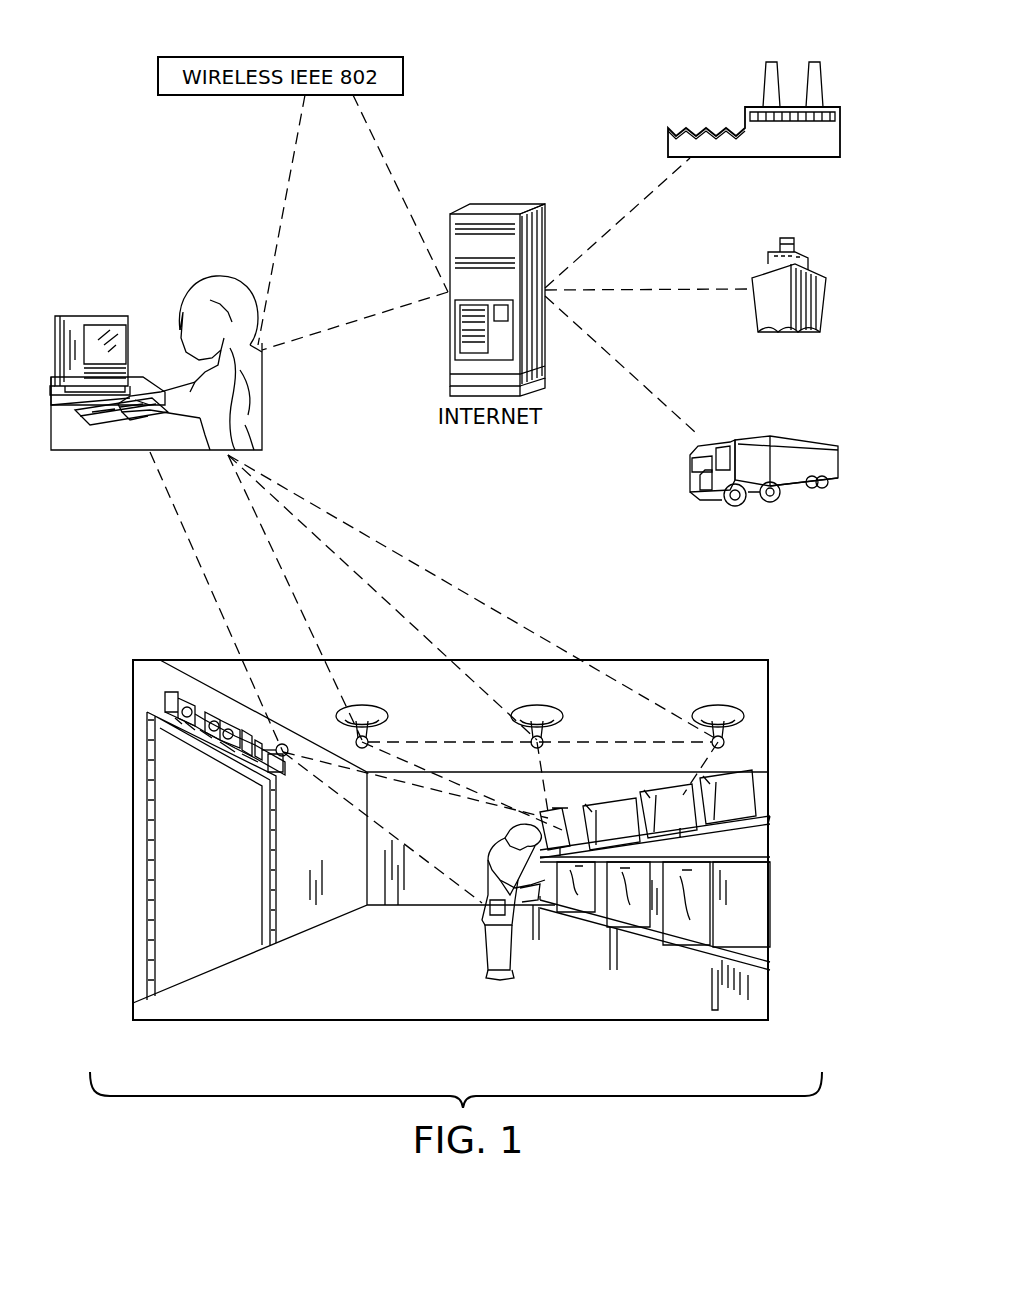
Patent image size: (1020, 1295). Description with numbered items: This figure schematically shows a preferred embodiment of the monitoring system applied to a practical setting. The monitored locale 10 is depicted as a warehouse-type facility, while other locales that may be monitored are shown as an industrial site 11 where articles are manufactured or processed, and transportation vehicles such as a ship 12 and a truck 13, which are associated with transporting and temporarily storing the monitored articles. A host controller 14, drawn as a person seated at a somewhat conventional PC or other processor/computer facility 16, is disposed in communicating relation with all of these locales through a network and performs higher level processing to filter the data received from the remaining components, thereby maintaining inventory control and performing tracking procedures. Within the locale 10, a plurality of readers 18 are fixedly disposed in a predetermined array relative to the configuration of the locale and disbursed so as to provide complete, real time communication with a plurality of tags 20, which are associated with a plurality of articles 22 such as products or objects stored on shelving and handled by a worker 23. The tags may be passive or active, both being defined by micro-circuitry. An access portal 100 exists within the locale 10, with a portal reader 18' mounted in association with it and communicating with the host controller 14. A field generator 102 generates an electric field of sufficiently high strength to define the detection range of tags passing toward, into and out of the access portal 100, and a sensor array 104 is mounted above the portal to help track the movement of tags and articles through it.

The monitored locale 10 is at (422, 804).
The industrial site 11 is at (717, 96).
The ship 12 is at (743, 257).
The truck 13 is at (736, 424).
The host controller 14 is at (156, 316).
The processor/computer facility 16 is at (97, 316).
The readers 18 is at (549, 684).
The doorway reader 18' is at (250, 778).
The tags 20 is at (433, 922).
The articles 22 is at (755, 912).
The worker 23 is at (485, 960).
The access portal 100 is at (292, 860).
The field generator 102 is at (172, 700).
The sensor array 104 is at (216, 690).